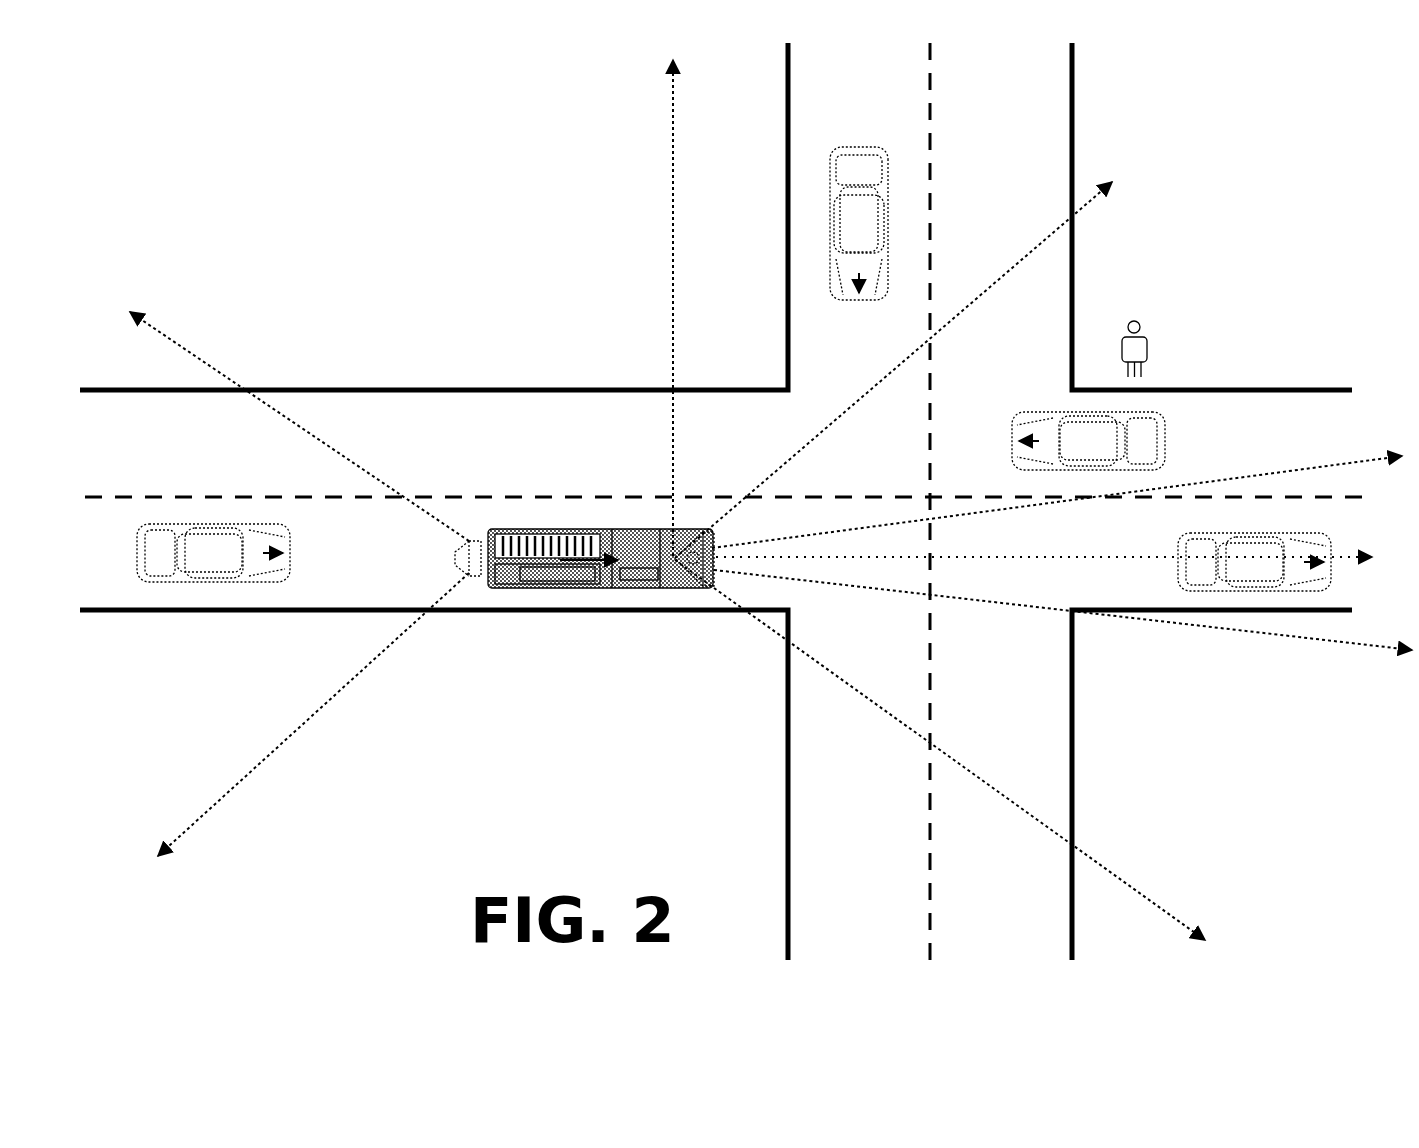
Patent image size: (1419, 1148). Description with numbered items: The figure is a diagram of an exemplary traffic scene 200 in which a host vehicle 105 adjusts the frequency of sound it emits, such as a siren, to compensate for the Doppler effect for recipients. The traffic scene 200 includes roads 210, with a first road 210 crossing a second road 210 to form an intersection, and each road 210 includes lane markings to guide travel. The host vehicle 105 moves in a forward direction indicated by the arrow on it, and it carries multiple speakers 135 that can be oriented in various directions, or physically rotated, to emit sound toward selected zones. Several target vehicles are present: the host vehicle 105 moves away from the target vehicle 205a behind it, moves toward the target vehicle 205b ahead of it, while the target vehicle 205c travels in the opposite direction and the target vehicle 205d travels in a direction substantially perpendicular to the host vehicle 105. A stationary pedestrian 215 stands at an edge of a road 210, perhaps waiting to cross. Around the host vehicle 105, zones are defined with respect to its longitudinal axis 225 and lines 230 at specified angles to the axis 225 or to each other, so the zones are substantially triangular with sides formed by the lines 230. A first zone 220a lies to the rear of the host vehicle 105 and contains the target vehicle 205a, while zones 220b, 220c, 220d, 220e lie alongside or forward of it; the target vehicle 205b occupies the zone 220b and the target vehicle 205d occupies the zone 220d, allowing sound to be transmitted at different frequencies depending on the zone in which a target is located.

The traffic scene 200 is at (411, 236).
The host vehicle 105 is at (606, 529).
The speakers 135 is at (468, 558).
The target vehicle 205a is at (238, 565).
The target vehicle 205b is at (1276, 574).
The target vehicle 205c is at (1116, 452).
The target vehicle 205d is at (855, 147).
The road 210 is at (170, 436).
The pedestrian 215 is at (1148, 346).
The first zone 220a is at (355, 566).
The zone 220b is at (1108, 589).
The zone 220c is at (898, 484).
The zone 220d is at (872, 369).
The zone 220e is at (900, 651).
The longitudinal axis 225 is at (1012, 552).
The lines 230 is at (209, 368).